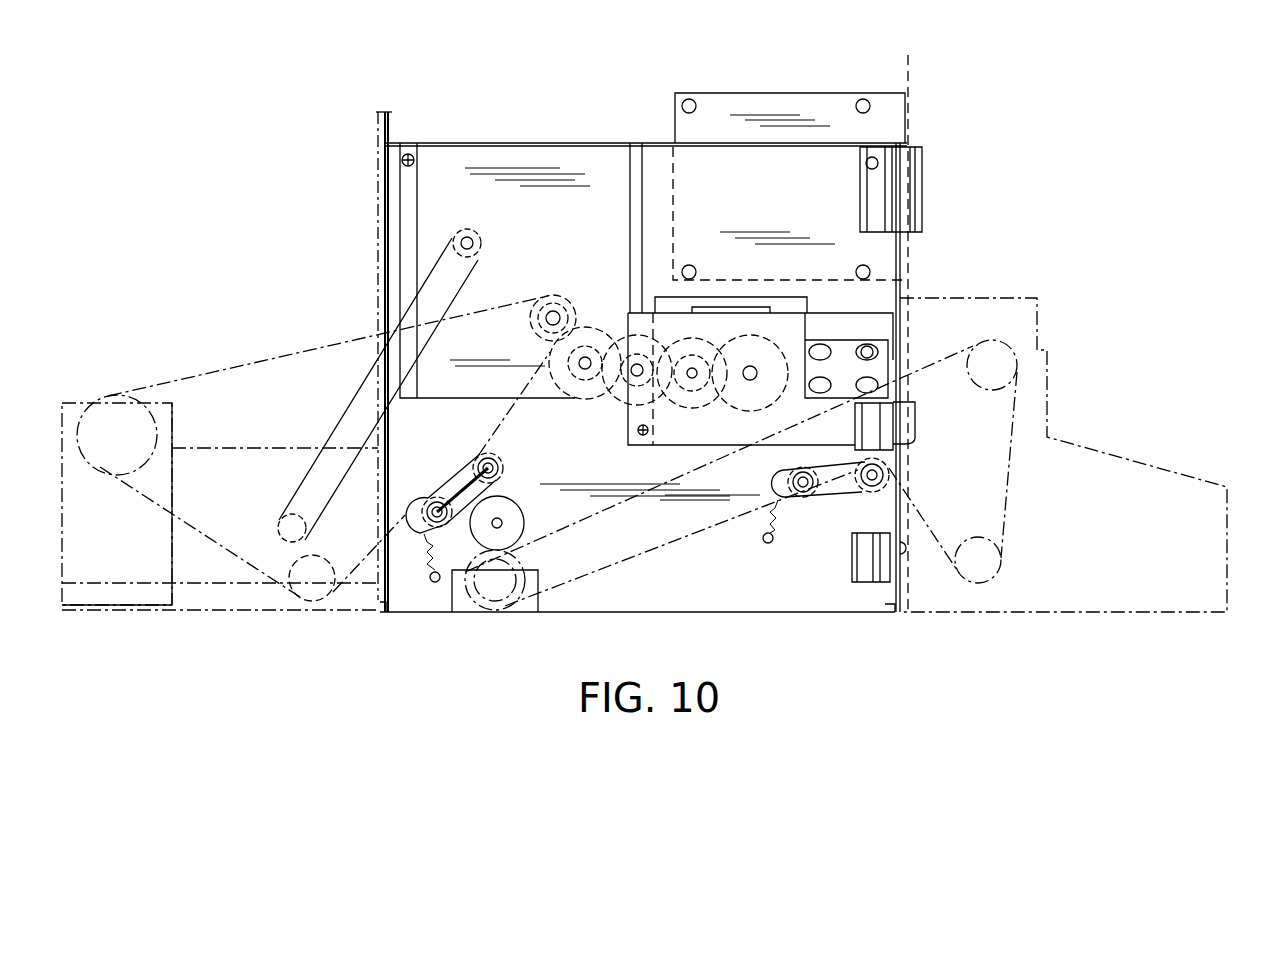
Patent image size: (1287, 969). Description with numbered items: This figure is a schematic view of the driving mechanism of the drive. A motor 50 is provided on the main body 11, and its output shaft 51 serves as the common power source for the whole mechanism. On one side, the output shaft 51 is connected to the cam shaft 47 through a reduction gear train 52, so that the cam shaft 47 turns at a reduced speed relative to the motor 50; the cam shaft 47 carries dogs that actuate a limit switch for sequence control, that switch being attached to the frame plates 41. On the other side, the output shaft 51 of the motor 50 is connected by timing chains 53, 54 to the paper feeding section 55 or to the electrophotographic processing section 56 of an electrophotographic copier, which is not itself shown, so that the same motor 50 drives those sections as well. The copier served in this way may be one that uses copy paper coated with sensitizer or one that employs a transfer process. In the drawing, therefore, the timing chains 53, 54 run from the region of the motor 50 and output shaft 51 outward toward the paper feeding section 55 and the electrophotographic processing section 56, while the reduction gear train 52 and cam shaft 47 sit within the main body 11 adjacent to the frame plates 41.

The main body 11 is at (395, 197).
The frame plates 41 is at (793, 312).
The cam shaft 47 is at (752, 368).
The motor 50 is at (540, 124).
The output shaft 51 is at (555, 312).
The reduction gear train 52 is at (603, 410).
The timing chain 53 is at (691, 545).
The timing chain 54 is at (320, 325).
The paper feeding section 55 is at (1135, 485).
The electrophotographic processing section 56 is at (222, 450).